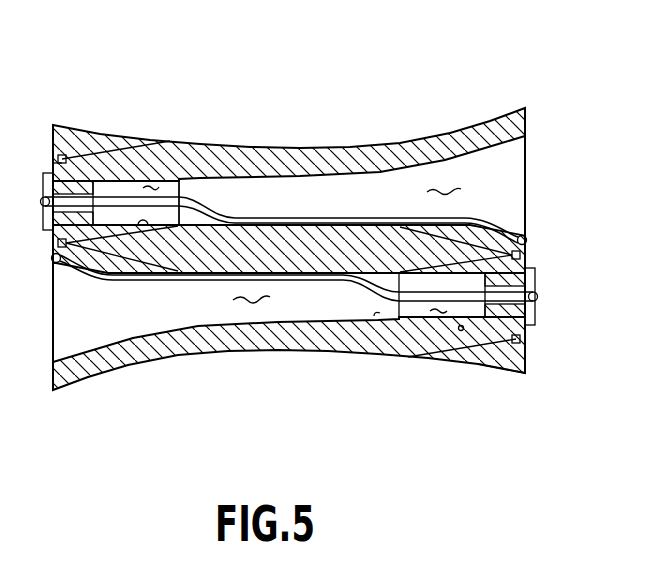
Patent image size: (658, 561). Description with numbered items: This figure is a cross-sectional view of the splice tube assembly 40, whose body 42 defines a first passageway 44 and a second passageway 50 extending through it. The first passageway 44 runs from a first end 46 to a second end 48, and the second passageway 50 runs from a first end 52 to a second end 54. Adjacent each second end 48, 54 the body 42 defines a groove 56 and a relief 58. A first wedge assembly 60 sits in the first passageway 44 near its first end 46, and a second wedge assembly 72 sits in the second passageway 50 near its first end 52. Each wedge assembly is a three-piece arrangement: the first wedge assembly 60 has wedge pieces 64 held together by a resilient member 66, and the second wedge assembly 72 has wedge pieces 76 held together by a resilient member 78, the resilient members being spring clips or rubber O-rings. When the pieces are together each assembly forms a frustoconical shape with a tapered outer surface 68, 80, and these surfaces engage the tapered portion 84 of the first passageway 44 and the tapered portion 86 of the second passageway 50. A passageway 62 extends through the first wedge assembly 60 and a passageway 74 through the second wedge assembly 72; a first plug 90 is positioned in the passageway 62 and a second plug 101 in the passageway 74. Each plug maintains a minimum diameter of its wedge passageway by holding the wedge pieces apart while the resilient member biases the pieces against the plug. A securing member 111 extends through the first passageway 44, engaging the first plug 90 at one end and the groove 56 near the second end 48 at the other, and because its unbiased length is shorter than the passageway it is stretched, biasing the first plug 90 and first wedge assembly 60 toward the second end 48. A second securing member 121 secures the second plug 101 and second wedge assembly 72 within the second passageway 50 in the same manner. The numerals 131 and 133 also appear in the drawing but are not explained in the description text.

The splice tube assembly 40 is at (370, 54).
The body 42 is at (316, 148).
The first passageway 44 is at (444, 190).
The first end of first passageway 46 is at (53, 158).
The second end of first passageway 48 is at (528, 173).
The second passageway 50 is at (255, 303).
The first end of second passageway 52 is at (527, 340).
The second end of second passageway 54 is at (50, 338).
The groove 56 is at (54, 260).
The relief 58 is at (25, 0).
The first wedge assembly 60 is at (113, 170).
The passageway of first wedge assembly 62 is at (160, 186).
The wedge pieces 64 is at (85, 170).
The resilient member 66 is at (58, 242).
The tapered outer surface 68 is at (163, 176).
The second wedge assembly 72 is at (490, 332).
The passageway of second wedge assembly 74 is at (418, 316).
The wedge pieces 76 is at (461, 331).
The resilient member 78 is at (513, 372).
The tapered outer surface 80 is at (417, 312).
The tapered portion 84 is at (197, 198).
The tapered portion 86 is at (374, 316).
The first plug 90 is at (43, 172).
The second plug 101 is at (537, 273).
The securing member 111 is at (362, 222).
The second securing member 121 is at (338, 277).
The tapered shaft 131 is at (145, 226).
The connector sleeve 133 is at (537, 307).